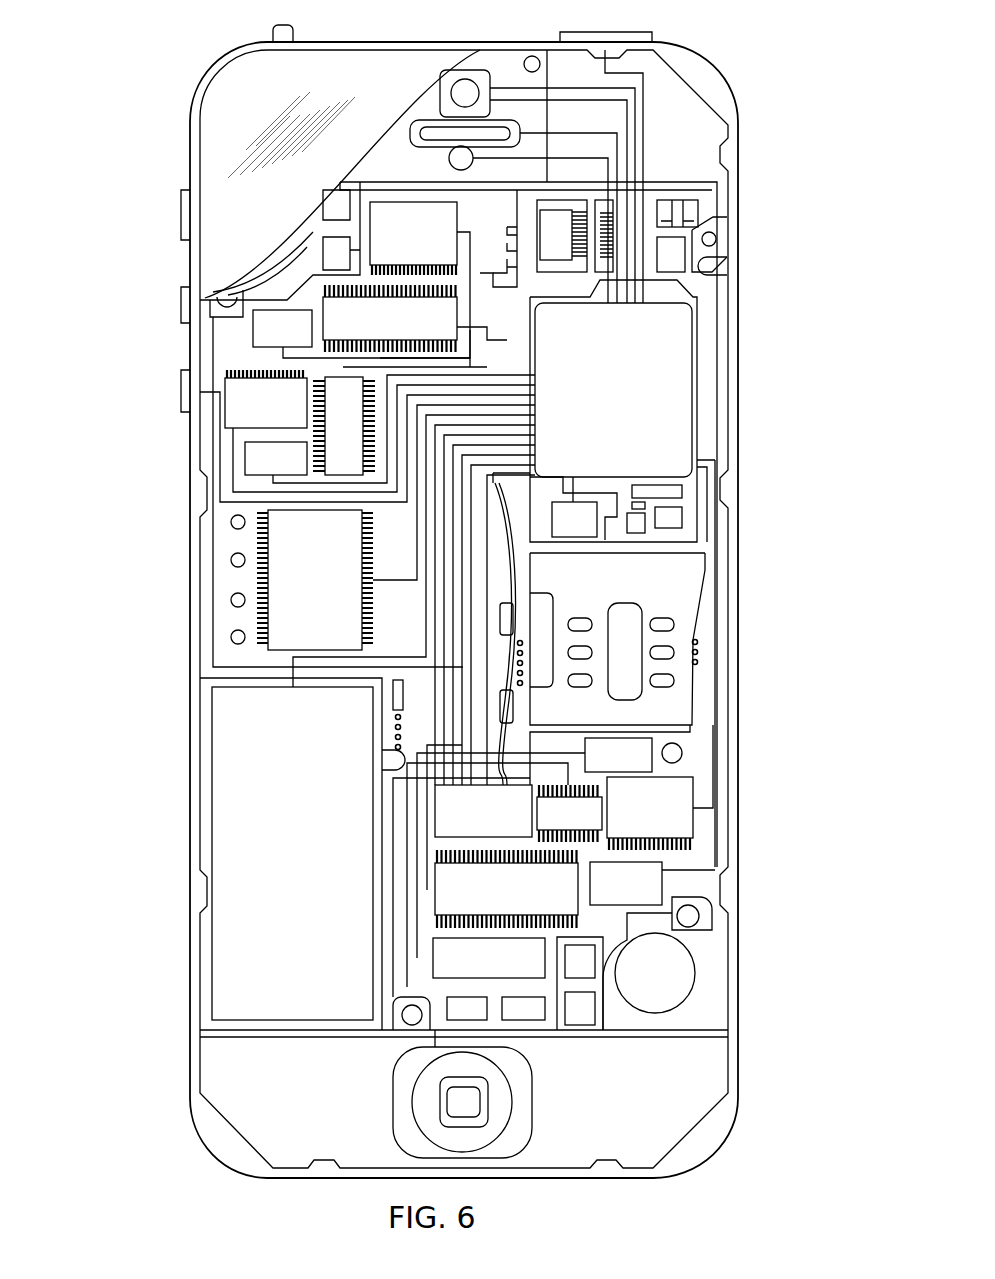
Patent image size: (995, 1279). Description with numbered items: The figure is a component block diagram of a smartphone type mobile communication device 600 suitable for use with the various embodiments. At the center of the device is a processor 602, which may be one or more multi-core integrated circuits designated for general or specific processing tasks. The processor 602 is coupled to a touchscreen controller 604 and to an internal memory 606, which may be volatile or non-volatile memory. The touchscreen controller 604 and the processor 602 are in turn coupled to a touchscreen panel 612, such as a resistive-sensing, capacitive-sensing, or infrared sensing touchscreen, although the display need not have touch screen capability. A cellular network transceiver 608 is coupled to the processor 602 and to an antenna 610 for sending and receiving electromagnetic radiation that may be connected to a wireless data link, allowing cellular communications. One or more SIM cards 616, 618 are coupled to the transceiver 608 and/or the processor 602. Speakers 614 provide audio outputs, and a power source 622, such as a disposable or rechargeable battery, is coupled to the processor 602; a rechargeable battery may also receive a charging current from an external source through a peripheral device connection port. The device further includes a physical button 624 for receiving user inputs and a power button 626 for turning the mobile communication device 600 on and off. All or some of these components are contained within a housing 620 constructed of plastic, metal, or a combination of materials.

The mobile communication device 600 is at (170, 78).
The processor 602 is at (604, 416).
The touchscreen controller 604 is at (395, 284).
The internal memory 606 is at (355, 318).
The cellular network transceiver 608 is at (302, 580).
The antenna 610 is at (685, 258).
The touchscreen panel 612 is at (213, 147).
The speakers 614 is at (427, 118).
The SIM card 616 is at (506, 889).
The SIM card 618 is at (489, 958).
The housing 620 is at (739, 1043).
The power source 622 is at (291, 854).
The physical button 624 is at (512, 1105).
The power button 626 is at (607, 32).